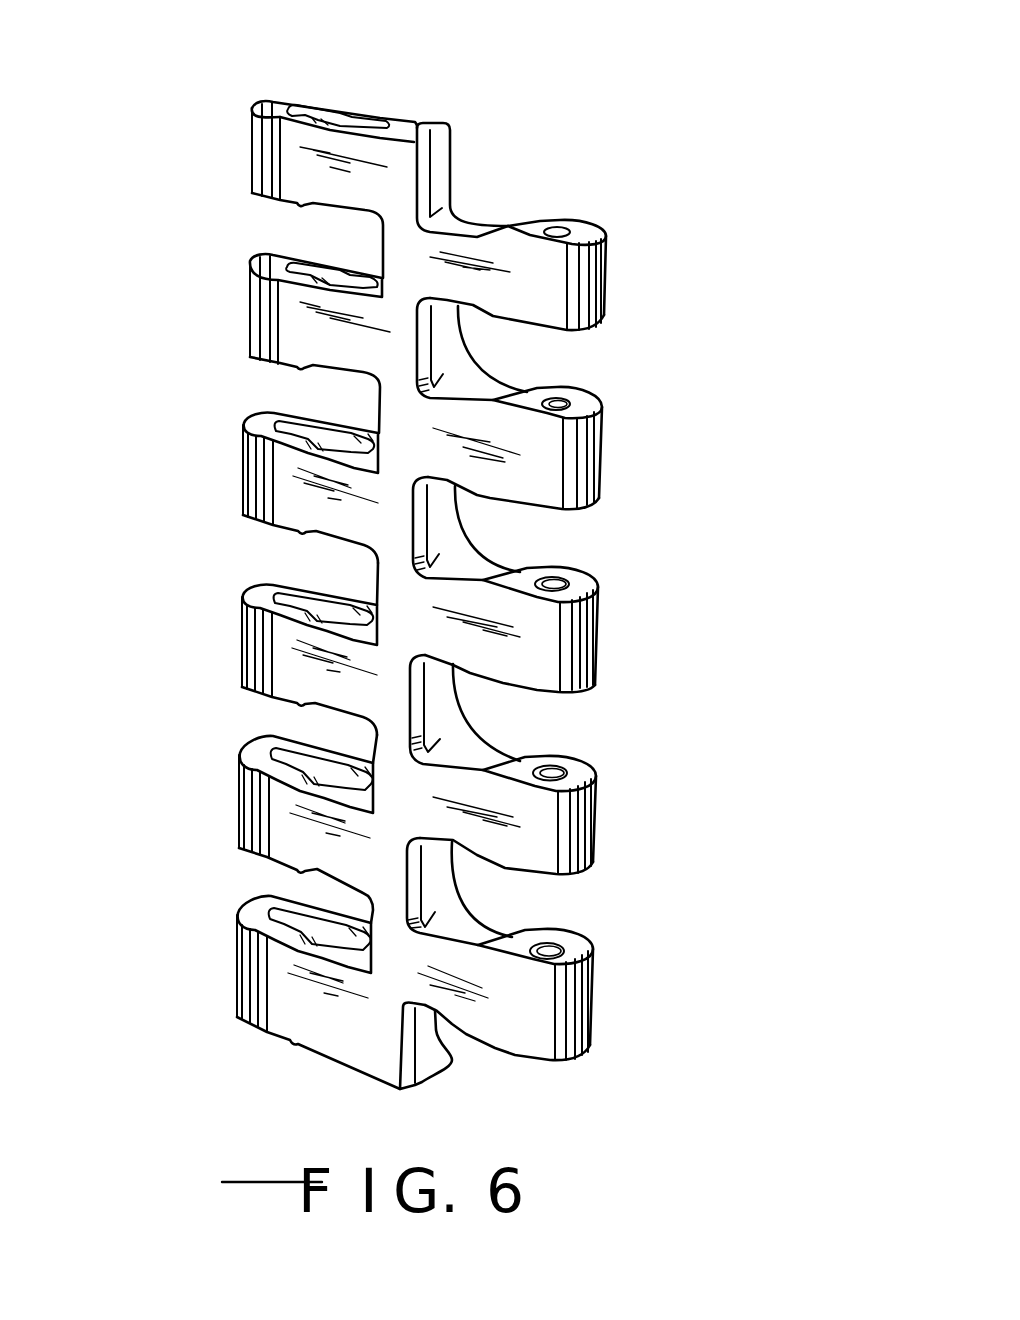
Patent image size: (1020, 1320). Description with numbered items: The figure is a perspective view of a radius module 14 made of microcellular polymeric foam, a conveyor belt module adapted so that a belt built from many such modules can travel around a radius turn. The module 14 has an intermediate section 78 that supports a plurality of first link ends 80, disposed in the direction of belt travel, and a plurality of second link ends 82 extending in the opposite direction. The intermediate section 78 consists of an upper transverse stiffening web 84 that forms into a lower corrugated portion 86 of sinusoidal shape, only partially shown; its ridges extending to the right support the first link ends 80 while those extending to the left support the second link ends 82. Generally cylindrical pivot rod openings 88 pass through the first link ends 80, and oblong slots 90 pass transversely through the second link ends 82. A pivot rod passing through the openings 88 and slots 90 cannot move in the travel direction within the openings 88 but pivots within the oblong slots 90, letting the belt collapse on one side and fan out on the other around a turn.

The radius module 14 is at (676, 100).
The intermediate section 78 is at (404, 152).
The first link ends 80 is at (560, 455).
The second link ends 82 is at (275, 313).
The transverse stiffening web 84 is at (408, 205).
The lower corrugated portion 86 is at (446, 363).
The pivot rod openings 88 is at (550, 768).
The oblong slots 90 is at (298, 598).